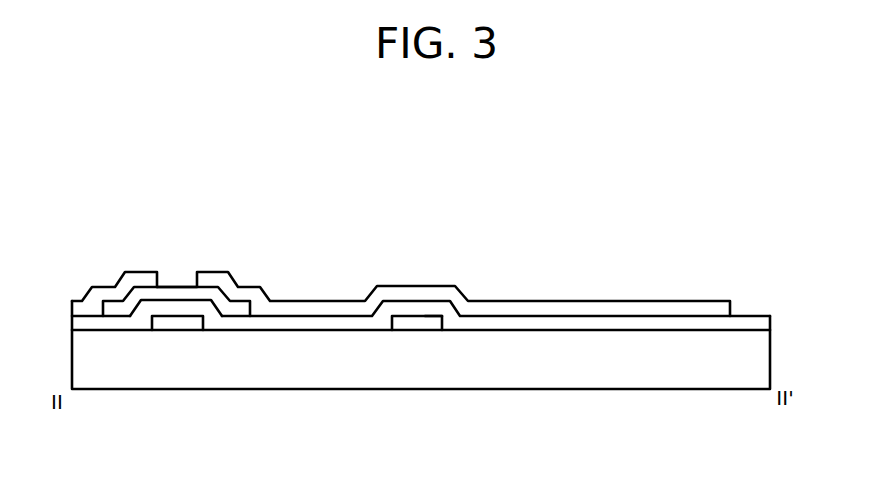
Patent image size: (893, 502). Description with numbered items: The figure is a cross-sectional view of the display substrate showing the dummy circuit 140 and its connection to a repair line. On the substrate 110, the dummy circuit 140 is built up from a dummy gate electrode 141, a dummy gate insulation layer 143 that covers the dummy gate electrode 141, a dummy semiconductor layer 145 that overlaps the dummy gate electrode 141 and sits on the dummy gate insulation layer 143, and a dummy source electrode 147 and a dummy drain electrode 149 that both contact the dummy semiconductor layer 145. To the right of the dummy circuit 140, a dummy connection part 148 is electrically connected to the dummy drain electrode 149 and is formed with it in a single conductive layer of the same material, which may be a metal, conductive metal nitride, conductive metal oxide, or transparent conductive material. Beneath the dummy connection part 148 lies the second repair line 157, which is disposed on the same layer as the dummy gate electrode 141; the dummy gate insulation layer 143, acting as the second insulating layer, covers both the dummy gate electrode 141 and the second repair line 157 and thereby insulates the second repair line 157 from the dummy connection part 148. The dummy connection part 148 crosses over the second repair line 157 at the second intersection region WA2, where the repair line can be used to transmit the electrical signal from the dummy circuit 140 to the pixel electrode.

The substrate 110 is at (737, 371).
The dummy connection part 148 is at (572, 308).
The second repair line 157 is at (415, 323).
The second intersection region WA2 is at (423, 316).
The dummy circuit 140 is at (401, 380).
The dummy gate electrode 141 is at (177, 323).
The dummy gate insulation layer 143 is at (223, 323).
The dummy semiconductor layer 145 is at (239, 308).
The dummy source electrode 147 is at (95, 297).
The dummy drain electrode 149 is at (443, 364).